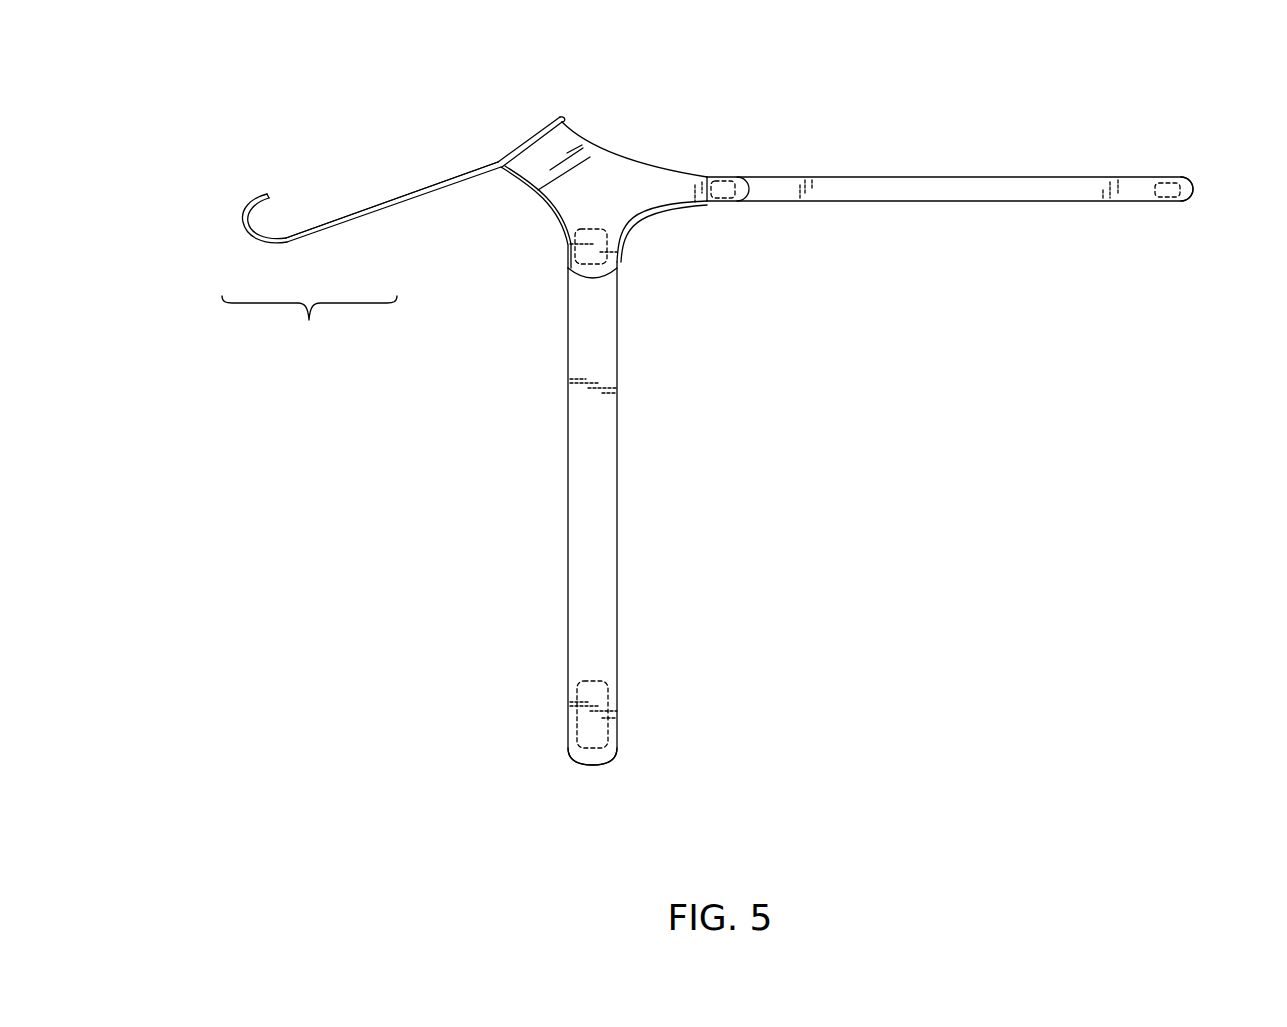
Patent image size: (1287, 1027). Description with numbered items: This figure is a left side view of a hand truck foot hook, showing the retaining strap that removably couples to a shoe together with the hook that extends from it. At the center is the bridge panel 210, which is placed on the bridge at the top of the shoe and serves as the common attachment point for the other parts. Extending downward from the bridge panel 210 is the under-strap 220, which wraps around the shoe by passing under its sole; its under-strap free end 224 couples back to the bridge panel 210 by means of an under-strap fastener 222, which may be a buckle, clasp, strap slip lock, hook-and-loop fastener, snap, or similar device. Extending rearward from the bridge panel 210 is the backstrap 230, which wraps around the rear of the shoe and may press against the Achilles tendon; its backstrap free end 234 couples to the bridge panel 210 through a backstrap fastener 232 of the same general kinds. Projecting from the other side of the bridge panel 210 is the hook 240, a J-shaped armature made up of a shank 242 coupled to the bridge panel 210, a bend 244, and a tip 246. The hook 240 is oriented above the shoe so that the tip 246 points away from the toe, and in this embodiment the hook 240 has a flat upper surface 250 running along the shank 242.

The bridge panel 210 is at (540, 145).
The under-strap 220 is at (575, 528).
The under-strap fastener 222 is at (610, 260).
The under-strap free end 224 is at (570, 757).
The backstrap 230 is at (918, 182).
The backstrap fastener 232 is at (722, 183).
The backstrap free end 234 is at (1190, 180).
The hook 240 is at (313, 228).
The shank 242 is at (315, 240).
The bend 244 is at (245, 223).
The tip 246 is at (267, 192).
The flat upper surface 250 is at (349, 216).